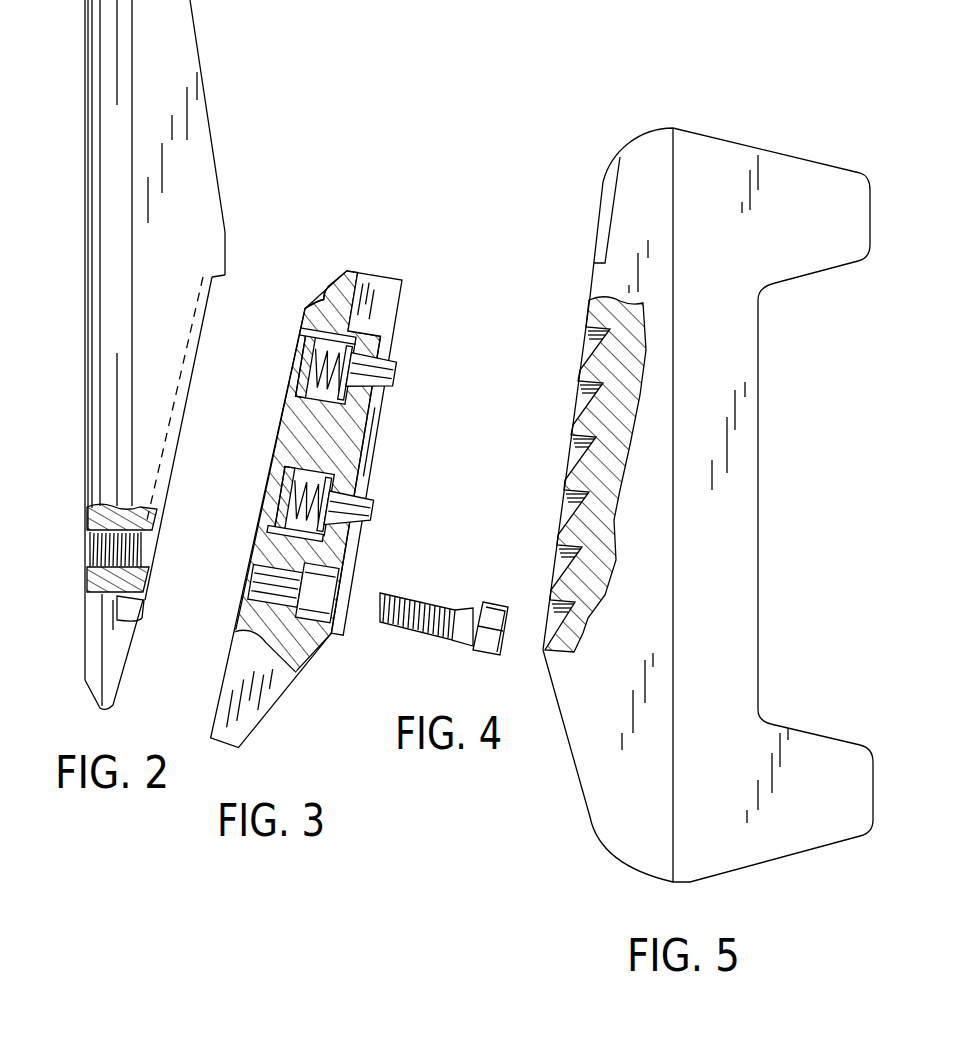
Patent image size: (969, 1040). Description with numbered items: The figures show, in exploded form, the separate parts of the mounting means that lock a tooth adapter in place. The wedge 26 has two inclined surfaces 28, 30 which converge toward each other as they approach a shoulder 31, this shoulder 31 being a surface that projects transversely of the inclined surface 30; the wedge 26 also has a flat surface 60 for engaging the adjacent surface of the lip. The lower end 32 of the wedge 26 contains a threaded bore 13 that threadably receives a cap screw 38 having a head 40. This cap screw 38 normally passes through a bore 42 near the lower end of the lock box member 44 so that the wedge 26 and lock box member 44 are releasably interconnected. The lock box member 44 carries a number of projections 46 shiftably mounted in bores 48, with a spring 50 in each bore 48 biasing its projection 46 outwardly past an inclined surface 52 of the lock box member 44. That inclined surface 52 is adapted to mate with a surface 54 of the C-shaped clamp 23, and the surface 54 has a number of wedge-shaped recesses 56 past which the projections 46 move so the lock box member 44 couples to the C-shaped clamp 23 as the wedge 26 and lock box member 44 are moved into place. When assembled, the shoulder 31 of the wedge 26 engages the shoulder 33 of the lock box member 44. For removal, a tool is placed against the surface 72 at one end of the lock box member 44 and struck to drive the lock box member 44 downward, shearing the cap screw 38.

In FIG. 2, the threaded bore 13 is at (100, 516).
In FIG. 5, the C-shaped clamp 23 is at (790, 150).
In FIG. 2, the wedge 26 is at (212, 127).
In FIG. 2, the inclined surface 28 is at (197, 45).
In FIG. 2, the inclined surface 30 is at (185, 421).
In FIG. 2, the shoulder 31 is at (214, 279).
In FIG. 2, the lower end 32 is at (83, 638).
In FIG. 3, the shoulder 33 is at (325, 300).
In FIG. 4, the cap screw 38 is at (432, 625).
In FIG. 4, the head 40 is at (497, 601).
In FIG. 3, the bore 42 is at (330, 577).
In FIG. 3, the lock box member 44 is at (372, 449).
In FIG. 3, the projections 46 is at (395, 376).
In FIG. 3, the bores 48 is at (301, 398).
In FIG. 3, the spring 50 is at (323, 337).
In FIG. 3, the inclined surface 52 is at (386, 414).
In FIG. 5, the surface 54 is at (590, 281).
In FIG. 5, the wedge-shaped recesses 56 is at (592, 346).
In FIG. 2, the flat surface 60 is at (85, 200).
In FIG. 3, the surface 72 is at (386, 319).